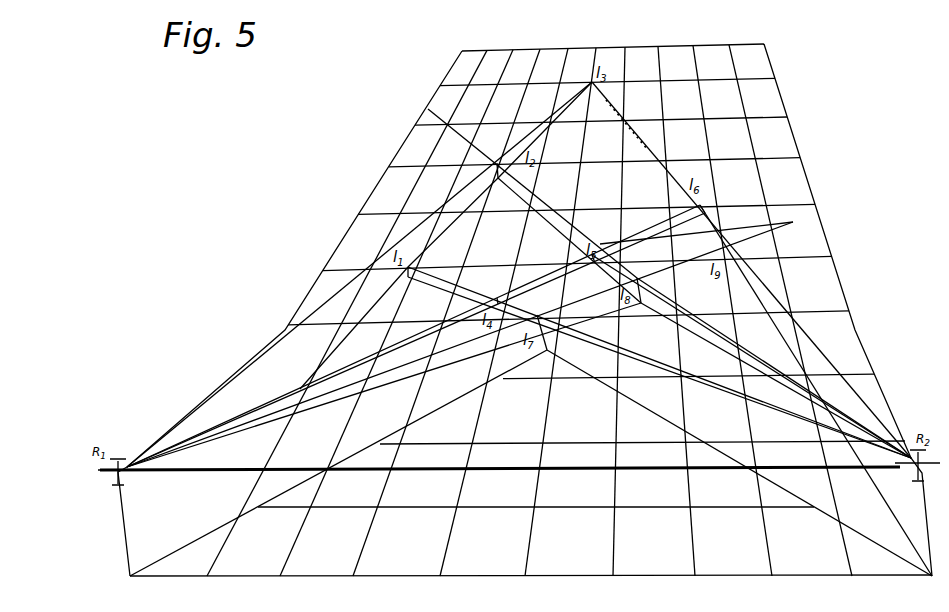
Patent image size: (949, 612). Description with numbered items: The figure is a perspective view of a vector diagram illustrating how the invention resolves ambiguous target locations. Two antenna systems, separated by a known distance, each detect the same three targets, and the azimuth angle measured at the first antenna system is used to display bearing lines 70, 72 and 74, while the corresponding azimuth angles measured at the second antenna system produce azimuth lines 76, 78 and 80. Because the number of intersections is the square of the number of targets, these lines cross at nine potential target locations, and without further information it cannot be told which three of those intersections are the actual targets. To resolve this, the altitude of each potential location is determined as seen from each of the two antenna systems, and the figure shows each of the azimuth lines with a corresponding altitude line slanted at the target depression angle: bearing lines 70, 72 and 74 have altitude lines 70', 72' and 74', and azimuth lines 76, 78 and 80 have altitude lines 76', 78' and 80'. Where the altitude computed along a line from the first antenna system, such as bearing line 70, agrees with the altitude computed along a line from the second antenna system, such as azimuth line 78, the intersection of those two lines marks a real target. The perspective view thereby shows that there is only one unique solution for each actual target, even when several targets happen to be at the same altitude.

The bearing line 70 is at (423, 235).
The altitude line 70' is at (359, 274).
The bearing line 72 is at (460, 344).
The altitude line 72' is at (413, 336).
The bearing line 74 is at (338, 463).
The altitude line 74' is at (384, 385).
The azimuth line 76 is at (739, 463).
The altitude line 76' is at (659, 362).
The azimuth line 78 is at (776, 380).
The altitude line 78' is at (751, 356).
The azimuth line 80 is at (816, 390).
The altitude line 80' is at (757, 270).